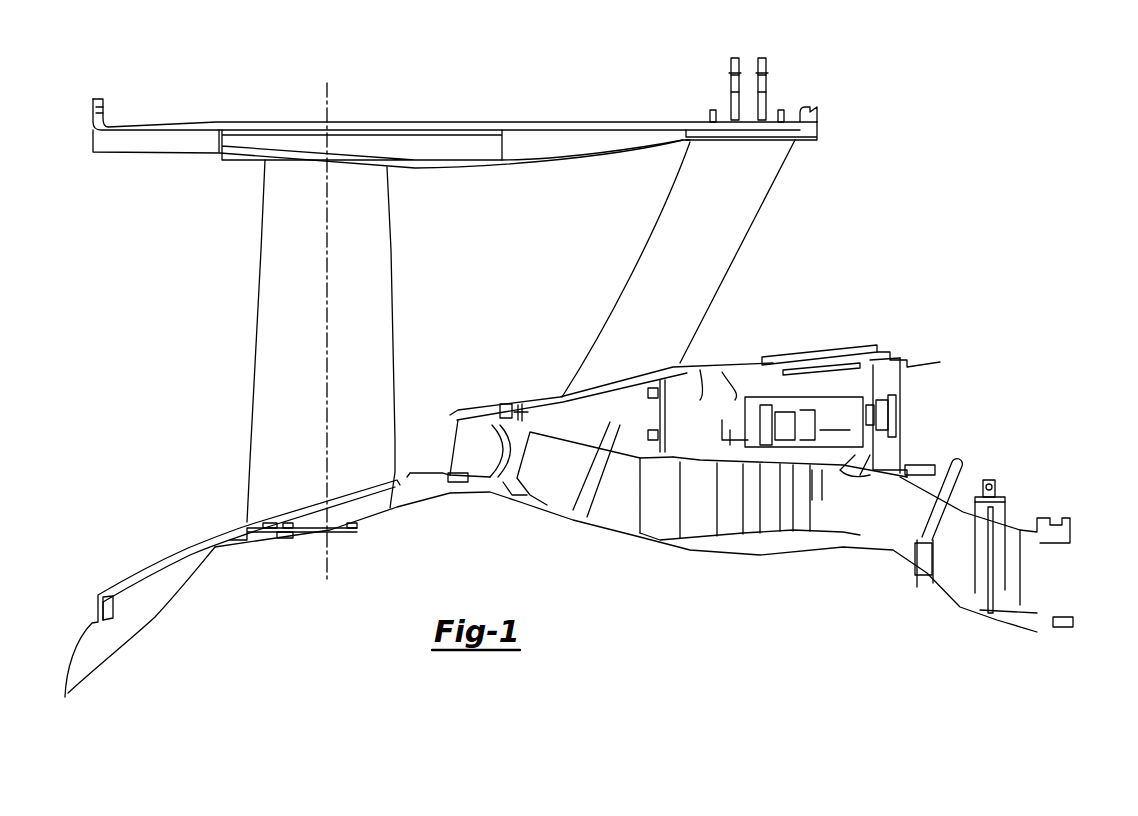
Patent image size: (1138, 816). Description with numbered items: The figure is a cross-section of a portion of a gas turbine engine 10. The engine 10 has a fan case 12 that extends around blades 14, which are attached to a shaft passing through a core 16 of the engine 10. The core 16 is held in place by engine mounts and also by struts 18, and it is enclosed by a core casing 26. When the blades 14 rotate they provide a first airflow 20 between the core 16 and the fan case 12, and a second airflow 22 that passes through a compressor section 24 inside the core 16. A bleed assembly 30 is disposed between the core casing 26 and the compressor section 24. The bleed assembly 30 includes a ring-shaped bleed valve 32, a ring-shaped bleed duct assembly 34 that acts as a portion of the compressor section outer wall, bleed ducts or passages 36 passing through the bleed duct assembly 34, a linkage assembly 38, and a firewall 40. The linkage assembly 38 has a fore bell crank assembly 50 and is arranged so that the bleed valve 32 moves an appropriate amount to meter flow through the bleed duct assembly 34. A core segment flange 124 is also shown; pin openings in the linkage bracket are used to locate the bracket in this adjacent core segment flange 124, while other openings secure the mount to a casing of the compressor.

The engine 10 is at (903, 227).
The fan case 12 is at (490, 120).
The blades 14 is at (298, 339).
The core 16 is at (457, 412).
The struts 18 is at (695, 263).
The first airflow 20 is at (525, 348).
The second airflow 22 is at (447, 435).
The compressor section 24 is at (750, 557).
The core casing 26 is at (837, 347).
The bleed assembly 30 is at (873, 378).
The bleed valve 32 is at (812, 413).
The bleed duct assembly 34 is at (817, 470).
The bleed ducts 36 is at (863, 457).
The linkage assembly 38 is at (885, 388).
The firewall 40 is at (900, 412).
The fore bell crank assembly 50 is at (620, 497).
The core segment flange 124 is at (740, 433).